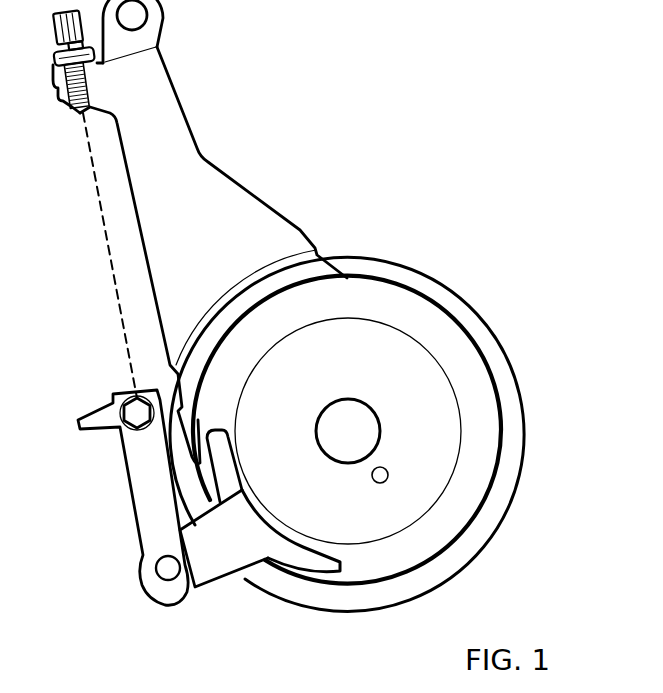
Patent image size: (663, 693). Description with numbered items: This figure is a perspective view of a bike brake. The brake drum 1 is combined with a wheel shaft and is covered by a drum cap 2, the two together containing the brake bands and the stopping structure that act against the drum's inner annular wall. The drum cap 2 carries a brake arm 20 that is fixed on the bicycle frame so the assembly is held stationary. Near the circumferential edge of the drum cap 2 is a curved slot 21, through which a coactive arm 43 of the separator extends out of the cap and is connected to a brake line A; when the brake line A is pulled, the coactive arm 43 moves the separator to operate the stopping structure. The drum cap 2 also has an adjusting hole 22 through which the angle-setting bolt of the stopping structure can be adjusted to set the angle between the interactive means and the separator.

The brake drum 1 is at (522, 382).
The drum cap 2 is at (452, 335).
The brake arm 20 is at (260, 194).
The curved slot 21 is at (317, 573).
The adjusting hole 22 is at (387, 479).
The coactive arm 43 is at (217, 560).
The brake line A is at (120, 321).